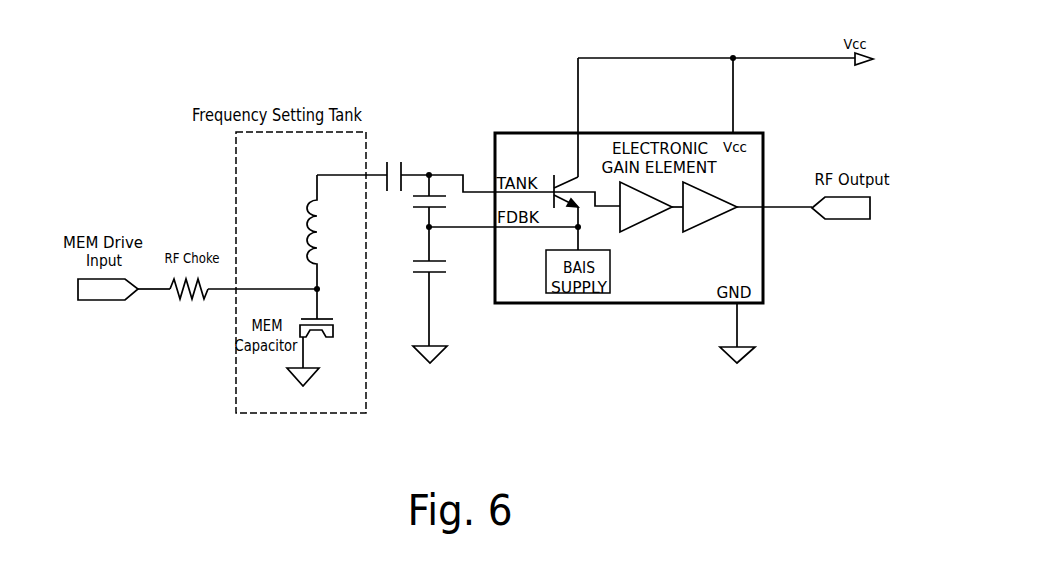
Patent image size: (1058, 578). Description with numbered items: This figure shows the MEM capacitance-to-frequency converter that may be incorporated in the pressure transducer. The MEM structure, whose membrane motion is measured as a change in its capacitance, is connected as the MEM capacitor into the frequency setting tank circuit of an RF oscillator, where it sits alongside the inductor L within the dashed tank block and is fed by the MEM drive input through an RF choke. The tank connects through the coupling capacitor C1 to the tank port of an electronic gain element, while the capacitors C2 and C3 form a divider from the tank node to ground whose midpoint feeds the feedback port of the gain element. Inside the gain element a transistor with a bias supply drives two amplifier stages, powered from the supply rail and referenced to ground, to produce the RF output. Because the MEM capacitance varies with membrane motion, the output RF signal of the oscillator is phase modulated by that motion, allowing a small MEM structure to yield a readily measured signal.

The inductor L is at (302, 232).
The capacitor C1 is at (394, 164).
The capacitor C2 is at (423, 201).
The capacitor C3 is at (423, 286).